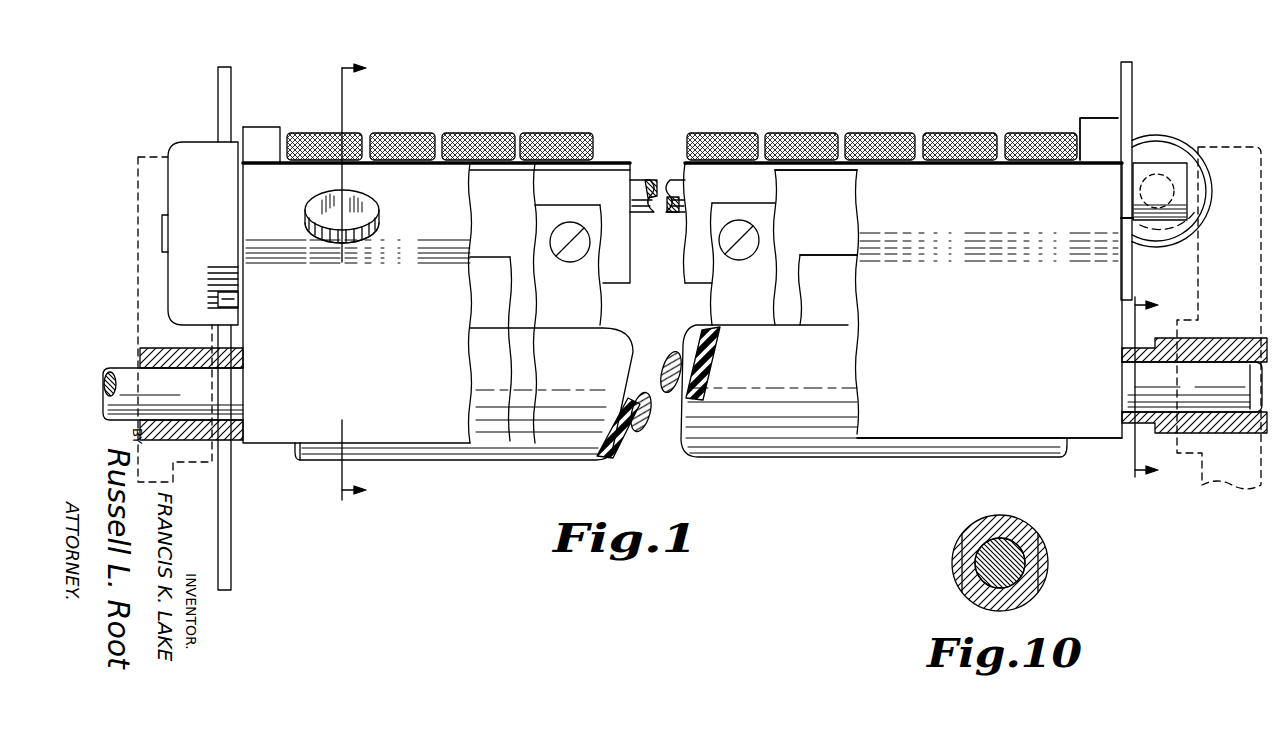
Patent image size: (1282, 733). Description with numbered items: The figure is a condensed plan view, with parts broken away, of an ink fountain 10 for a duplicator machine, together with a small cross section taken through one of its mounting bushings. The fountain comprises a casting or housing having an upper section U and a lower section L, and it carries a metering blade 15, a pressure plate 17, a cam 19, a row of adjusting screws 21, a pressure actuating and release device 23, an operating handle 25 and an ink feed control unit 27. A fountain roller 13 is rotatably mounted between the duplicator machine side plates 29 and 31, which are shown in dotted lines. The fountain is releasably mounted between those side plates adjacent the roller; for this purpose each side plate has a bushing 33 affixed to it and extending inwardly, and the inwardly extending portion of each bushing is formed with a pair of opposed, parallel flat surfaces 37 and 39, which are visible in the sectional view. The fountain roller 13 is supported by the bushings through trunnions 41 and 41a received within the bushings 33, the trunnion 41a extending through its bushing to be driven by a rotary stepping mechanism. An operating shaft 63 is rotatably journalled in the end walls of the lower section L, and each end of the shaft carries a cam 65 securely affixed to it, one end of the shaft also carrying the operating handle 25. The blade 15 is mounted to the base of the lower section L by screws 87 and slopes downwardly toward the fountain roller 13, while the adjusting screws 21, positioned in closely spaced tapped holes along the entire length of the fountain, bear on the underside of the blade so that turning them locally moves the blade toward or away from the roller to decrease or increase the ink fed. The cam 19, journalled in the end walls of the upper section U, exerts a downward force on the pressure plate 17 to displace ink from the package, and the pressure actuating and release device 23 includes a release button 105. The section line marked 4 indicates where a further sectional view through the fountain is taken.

In FIG. 1, the ink fountain 10 is at (699, 83).
In FIG. 1, the fountain roller 13 is at (681, 392).
In FIG. 1, the metering blade 15 is at (737, 262).
In FIG. 1, the pressure plate 17 is at (816, 203).
In FIG. 1, the cam 19 is at (828, 280).
In FIG. 1, the adjusting screws 21 is at (928, 128).
In FIG. 1, the pressure actuating and release device 23 is at (386, 197).
In FIG. 1, the operating handle 25 is at (1171, 145).
In FIG. 1, the ink feed control unit 27 is at (194, 142).
In FIG. 1, the duplicator machine side plate 29 is at (138, 291).
In FIG. 1, the duplicator machine side plate 31 is at (1212, 490).
In FIG. 1, the bushing 33 is at (138, 356).
In FIG. 10, the bushing 33 is at (970, 599).
In FIG. 10, the flat surface 37 is at (960, 563).
In FIG. 10, the flat surface 39 is at (1040, 563).
In FIG. 1, the trunnion 41 is at (1192, 387).
In FIG. 10, the trunnion 41 is at (1023, 590).
In FIG. 1, the trunnion 41a is at (173, 394).
In FIG. 1, the operating shaft 63 is at (644, 180).
In FIG. 1, the cam 65 is at (232, 78).
In FIG. 1, the screws 87 is at (570, 260).
In FIG. 1, the release button 105 is at (380, 216).
In FIG. 1, the section line 4 is at (365, 282).
In FIG. 1, the lower section L is at (1082, 118).
In FIG. 1, the upper section U is at (989, 391).